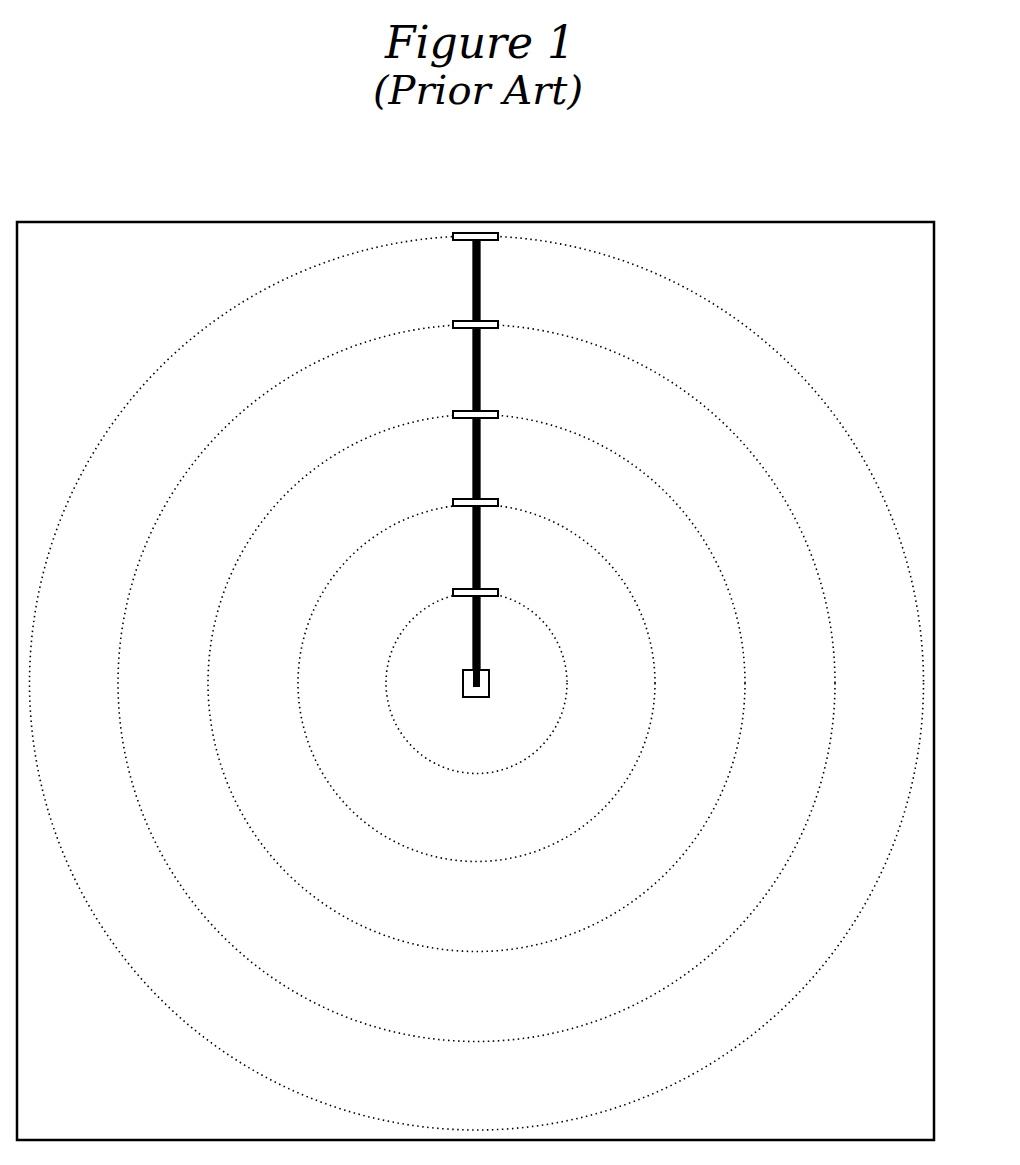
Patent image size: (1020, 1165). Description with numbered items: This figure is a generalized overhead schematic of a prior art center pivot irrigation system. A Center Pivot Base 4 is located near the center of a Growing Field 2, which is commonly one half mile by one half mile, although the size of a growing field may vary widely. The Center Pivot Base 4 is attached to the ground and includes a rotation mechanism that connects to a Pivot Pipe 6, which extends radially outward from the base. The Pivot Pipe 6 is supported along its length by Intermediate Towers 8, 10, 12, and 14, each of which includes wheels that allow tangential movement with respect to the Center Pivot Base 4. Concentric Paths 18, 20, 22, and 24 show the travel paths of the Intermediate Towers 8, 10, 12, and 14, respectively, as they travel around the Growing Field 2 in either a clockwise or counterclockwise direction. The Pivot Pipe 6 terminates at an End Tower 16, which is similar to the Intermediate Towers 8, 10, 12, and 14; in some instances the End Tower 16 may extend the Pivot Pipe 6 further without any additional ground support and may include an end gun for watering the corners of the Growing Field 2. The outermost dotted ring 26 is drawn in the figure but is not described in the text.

The growing field 2 is at (870, 226).
The center pivot base 4 is at (490, 688).
The pivot pipe 6 is at (482, 636).
The intermediate tower 8 is at (447, 590).
The intermediate tower 10 is at (451, 502).
The intermediate tower 12 is at (456, 409).
The intermediate tower 14 is at (456, 323).
The end tower 16 is at (500, 236).
The path 18 is at (394, 637).
The path 20 is at (327, 578).
The path 22 is at (262, 521).
The path 24 is at (197, 463).
The fifth ring 26 is at (130, 398).